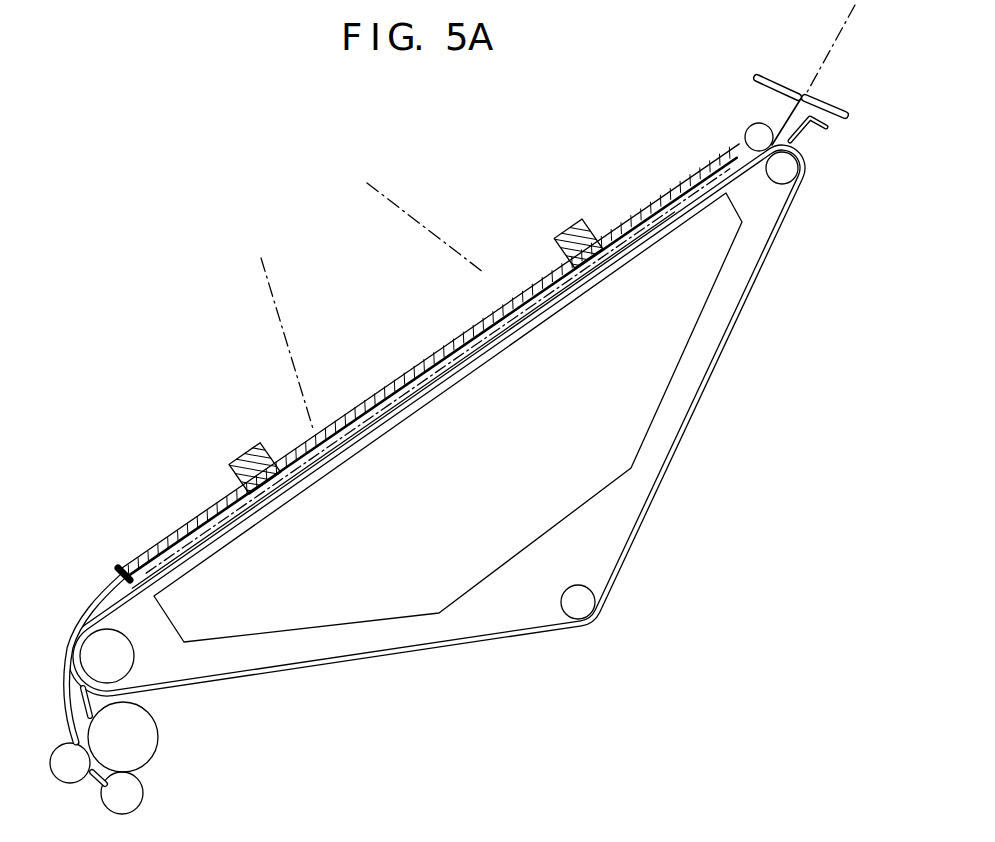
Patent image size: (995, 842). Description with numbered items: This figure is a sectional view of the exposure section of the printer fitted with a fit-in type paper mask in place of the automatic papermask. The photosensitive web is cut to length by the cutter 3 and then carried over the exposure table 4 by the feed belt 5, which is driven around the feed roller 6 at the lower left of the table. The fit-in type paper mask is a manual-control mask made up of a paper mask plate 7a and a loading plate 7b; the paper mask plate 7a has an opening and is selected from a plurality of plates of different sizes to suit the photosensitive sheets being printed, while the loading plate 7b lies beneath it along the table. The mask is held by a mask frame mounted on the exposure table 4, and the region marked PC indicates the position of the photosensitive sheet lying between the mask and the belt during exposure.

The cutter 3 is at (779, 75).
The exposure table 4 is at (618, 437).
The feed belt 5 is at (708, 385).
The feed roller 6 is at (92, 640).
The paper mask plate 7a is at (526, 290).
The loading plate 7b is at (447, 357).
The photoconductor / paper sheet PC is at (672, 210).